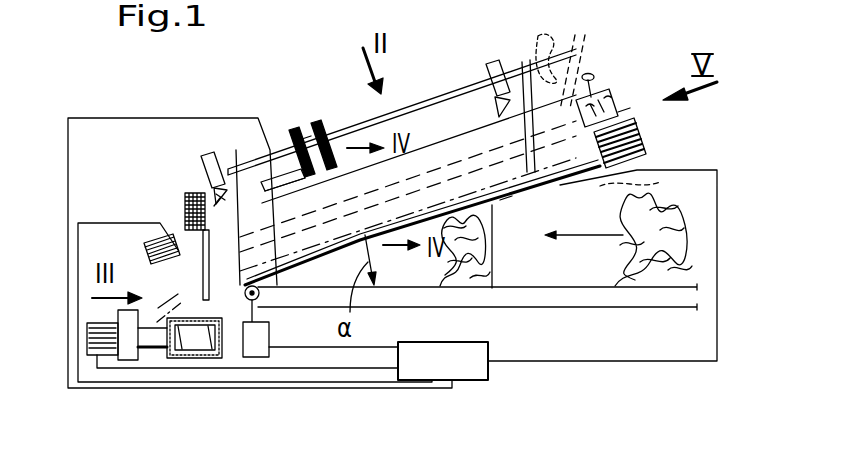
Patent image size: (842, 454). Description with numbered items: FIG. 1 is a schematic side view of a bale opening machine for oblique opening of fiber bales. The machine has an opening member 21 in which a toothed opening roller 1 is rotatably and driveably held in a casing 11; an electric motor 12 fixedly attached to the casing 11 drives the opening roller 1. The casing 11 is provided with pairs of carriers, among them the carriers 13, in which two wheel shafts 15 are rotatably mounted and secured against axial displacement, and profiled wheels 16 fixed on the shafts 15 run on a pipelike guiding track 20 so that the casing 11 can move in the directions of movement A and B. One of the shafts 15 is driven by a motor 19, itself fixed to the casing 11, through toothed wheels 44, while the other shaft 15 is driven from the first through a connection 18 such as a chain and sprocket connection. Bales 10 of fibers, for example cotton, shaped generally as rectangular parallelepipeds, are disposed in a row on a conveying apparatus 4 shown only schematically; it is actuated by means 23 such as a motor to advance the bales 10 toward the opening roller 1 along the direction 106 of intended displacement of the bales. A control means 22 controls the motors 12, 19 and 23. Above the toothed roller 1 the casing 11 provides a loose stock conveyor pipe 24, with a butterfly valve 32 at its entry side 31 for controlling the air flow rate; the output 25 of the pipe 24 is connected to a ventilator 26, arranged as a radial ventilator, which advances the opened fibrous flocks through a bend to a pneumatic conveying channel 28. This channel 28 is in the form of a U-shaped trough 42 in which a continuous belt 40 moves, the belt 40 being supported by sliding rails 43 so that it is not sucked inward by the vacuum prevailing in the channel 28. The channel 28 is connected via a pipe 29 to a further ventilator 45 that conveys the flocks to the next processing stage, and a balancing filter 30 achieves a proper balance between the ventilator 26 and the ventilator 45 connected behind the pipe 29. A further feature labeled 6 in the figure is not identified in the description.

The toothed opening roller 1 is at (589, 74).
The conveying apparatus 4 is at (374, 286).
The drum outlet 6 is at (505, 205).
The bales of fibers 10 is at (445, 290).
The casing 11 is at (463, 133).
The electric motor 12 is at (648, 150).
The carriers 13 is at (240, 162).
The wheel shafts 15 is at (415, 106).
The profiled wheels 16 is at (208, 160).
The connection 18 is at (316, 121).
The motor 19 is at (282, 168).
The pipelike guiding track 20 is at (216, 188).
The opening member 21 is at (343, 108).
The control means 22 is at (490, 346).
The actuating means 23 is at (269, 336).
The loose stock conveyor pipe 24 is at (563, 57).
The output 25 is at (209, 262).
The ventilator 26 is at (170, 237).
The pneumatic conveying channel 28 is at (213, 338).
The pipe 29 is at (148, 342).
The balancing filter 30 is at (188, 203).
The entry side 31 is at (606, 86).
The butterfly valve 32 is at (620, 102).
The continuous belt 40 is at (193, 352).
The U-shaped trough 42 is at (198, 352).
The sliding rails 43 is at (182, 356).
The toothed wheels 44 is at (294, 128).
The ventilator 45 is at (118, 313).
The direction of intended displacement of the fiber bales 106 is at (589, 240).